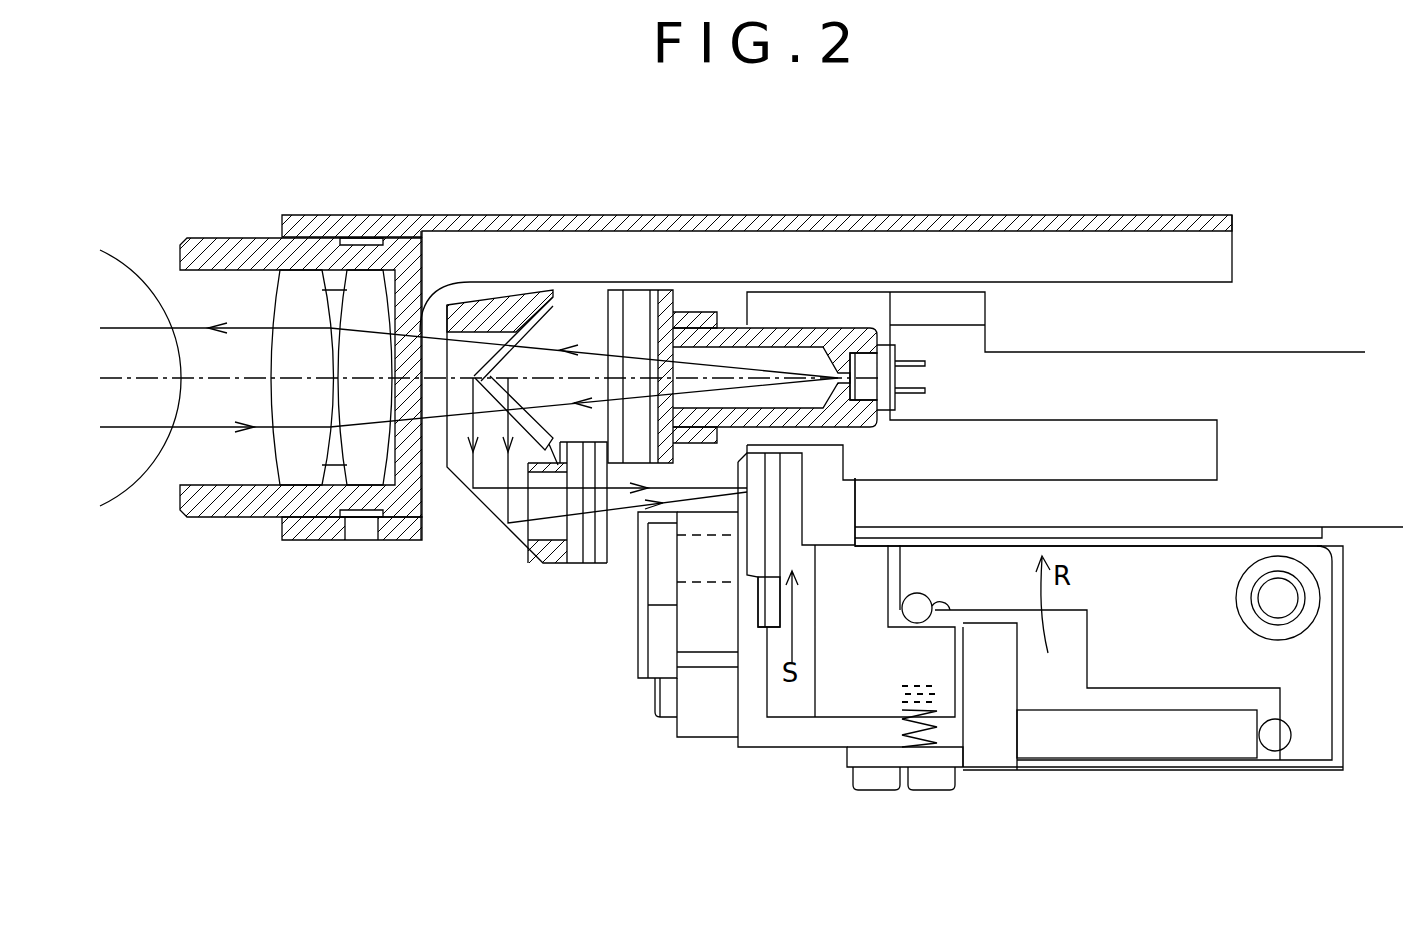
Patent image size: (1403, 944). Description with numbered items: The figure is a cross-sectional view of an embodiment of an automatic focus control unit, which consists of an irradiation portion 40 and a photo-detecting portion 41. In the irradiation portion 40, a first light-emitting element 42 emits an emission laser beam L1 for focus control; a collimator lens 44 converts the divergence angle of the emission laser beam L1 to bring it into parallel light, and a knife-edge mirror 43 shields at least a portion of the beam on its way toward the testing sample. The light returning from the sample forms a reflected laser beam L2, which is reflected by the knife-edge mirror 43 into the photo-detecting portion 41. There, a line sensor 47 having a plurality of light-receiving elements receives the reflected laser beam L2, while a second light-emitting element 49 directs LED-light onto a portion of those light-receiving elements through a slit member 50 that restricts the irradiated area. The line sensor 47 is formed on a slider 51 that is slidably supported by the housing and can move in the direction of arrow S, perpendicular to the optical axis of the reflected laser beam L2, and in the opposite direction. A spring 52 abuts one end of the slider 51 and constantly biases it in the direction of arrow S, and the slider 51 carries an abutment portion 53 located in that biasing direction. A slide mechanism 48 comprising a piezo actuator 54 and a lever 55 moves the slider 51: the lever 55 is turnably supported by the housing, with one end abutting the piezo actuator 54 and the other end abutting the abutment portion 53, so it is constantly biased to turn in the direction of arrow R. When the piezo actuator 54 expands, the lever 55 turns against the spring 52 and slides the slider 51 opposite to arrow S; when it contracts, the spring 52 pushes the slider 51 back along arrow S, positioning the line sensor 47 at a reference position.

The irradiation portion 40 is at (497, 215).
The photo-detecting portion 41 is at (1183, 763).
The first light-emitting element 42 is at (870, 370).
The knife-edge mirror 43 is at (548, 420).
The collimator lens 44 is at (375, 282).
The line sensor 47 is at (738, 512).
The slide mechanism 48 is at (838, 693).
The second light-emitting element 49 is at (722, 570).
The slit member 50 is at (662, 590).
The slider 51 is at (768, 608).
The spring 52 is at (937, 755).
The abutment portion 53 is at (970, 613).
The piezo actuator 54 is at (1108, 740).
The lever 55 is at (1310, 735).
The emission laser beam L1 is at (243, 330).
The reflected laser beam L2 is at (222, 430).